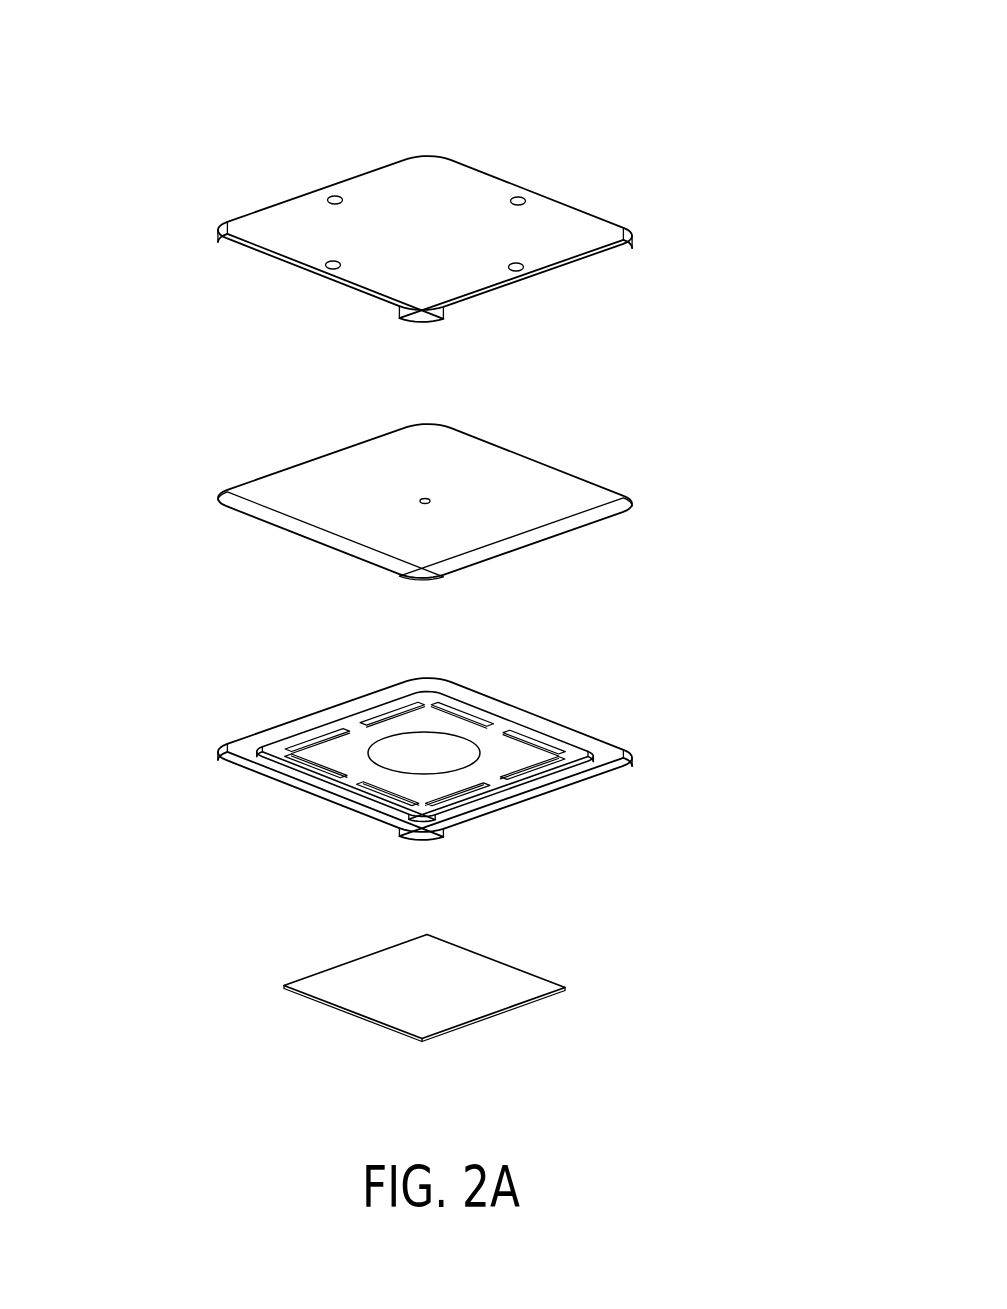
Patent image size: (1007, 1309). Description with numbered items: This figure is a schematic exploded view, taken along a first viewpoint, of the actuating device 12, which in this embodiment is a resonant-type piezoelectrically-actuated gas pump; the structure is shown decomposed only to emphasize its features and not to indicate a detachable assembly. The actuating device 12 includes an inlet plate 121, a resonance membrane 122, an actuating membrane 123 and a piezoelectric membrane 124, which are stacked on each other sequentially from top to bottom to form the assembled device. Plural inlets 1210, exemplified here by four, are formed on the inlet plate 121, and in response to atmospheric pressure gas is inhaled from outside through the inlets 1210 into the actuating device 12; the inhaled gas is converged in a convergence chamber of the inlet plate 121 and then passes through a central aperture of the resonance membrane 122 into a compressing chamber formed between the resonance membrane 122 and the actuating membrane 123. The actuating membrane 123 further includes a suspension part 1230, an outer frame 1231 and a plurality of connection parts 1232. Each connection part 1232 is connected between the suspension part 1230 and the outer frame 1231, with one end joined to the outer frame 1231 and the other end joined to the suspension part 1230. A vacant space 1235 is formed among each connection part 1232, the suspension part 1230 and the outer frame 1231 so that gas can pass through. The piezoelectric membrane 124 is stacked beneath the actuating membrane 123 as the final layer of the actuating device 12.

The actuating device 12 is at (688, 55).
The inlet plate 121 is at (480, 223).
The inlets 1210 is at (331, 196).
The resonance membrane 122 is at (680, 505).
The actuating membrane 123 is at (445, 749).
The suspension part 1230 is at (335, 752).
The outer frame 1231 is at (240, 757).
The connection parts 1232 is at (338, 782).
The vacant space 1235 is at (432, 707).
The piezoelectric membrane 124 is at (468, 977).